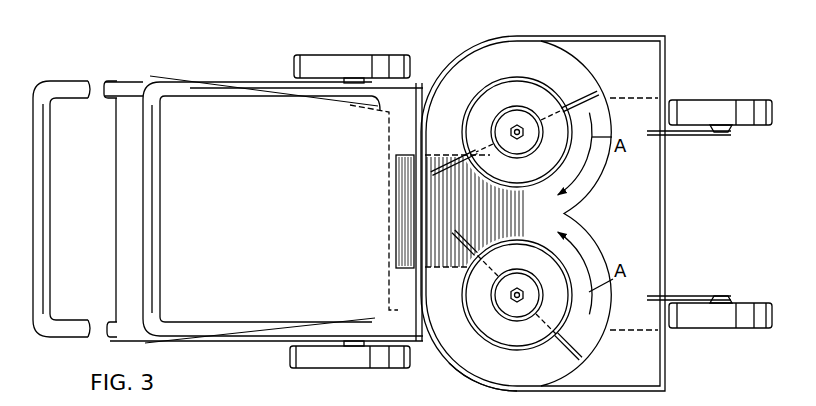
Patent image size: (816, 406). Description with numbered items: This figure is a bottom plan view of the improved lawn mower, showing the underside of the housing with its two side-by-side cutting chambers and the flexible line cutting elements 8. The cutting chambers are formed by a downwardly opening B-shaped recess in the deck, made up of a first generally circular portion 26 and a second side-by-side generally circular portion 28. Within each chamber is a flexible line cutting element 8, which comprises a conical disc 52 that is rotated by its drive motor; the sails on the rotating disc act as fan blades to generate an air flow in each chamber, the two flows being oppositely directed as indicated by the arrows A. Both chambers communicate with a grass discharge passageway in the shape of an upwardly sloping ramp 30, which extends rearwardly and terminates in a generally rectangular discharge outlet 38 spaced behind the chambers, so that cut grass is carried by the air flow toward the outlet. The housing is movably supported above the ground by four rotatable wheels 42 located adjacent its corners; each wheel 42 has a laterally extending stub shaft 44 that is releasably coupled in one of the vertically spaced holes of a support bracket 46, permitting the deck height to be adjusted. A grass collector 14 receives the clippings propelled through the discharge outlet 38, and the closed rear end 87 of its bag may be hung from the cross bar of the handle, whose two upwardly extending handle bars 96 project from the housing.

The flexible line cutting element 8 is at (462, 161).
The grass collector 14 is at (302, 283).
The first generally circular portion 26 is at (576, 60).
The second generally circular portion 28 is at (590, 358).
The ramp 30 is at (453, 219).
The discharge outlet 38 is at (396, 219).
The wheels 42 is at (310, 72).
The stub shaft 44 is at (721, 136).
The support brackets 46 is at (703, 136).
The conical disc 52 is at (508, 98).
The closed rear end 87 is at (116, 246).
The handle bars 96 is at (240, 85).